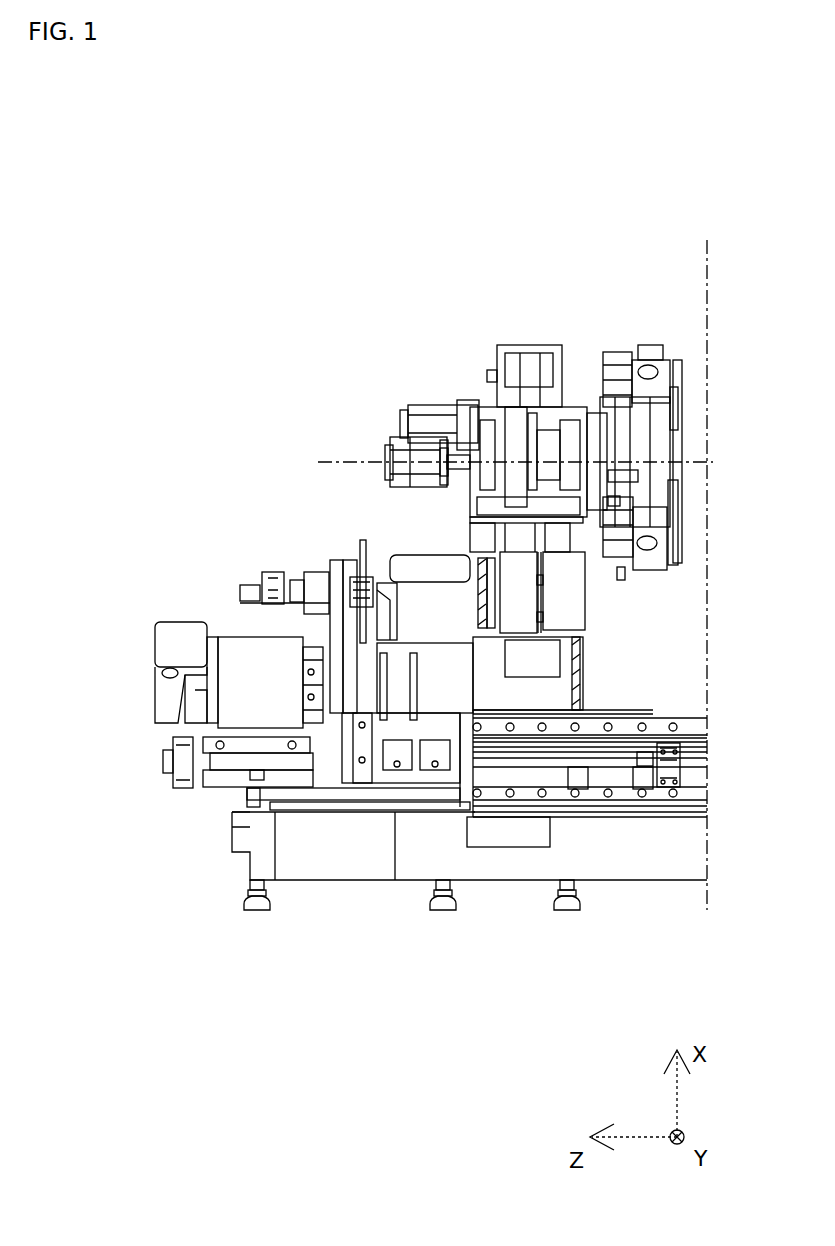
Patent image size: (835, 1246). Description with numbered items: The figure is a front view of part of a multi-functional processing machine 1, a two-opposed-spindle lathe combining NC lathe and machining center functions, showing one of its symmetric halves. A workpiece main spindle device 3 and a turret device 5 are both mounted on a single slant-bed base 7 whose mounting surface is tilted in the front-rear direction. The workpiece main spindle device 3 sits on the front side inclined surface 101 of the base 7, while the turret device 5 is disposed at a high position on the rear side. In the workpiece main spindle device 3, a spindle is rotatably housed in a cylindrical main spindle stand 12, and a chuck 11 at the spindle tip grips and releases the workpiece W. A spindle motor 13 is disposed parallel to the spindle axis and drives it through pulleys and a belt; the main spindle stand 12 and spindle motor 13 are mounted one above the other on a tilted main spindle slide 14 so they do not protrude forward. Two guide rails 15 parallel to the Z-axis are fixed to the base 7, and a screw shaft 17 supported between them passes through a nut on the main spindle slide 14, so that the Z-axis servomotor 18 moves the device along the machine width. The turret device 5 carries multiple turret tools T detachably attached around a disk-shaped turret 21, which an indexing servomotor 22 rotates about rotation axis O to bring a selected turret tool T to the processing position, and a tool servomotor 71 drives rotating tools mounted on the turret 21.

The multi-functional processing machine 1 is at (587, 197).
The workpiece main spindle device 3 is at (212, 565).
The turret device 5 is at (520, 325).
The base 7 is at (417, 855).
The chuck 11 is at (517, 580).
The main spindle stand 12 is at (407, 572).
The spindle motor 13 is at (238, 668).
The main spindle slide 14 is at (333, 793).
The guide rail 15 is at (684, 722).
The screw shaft 17 is at (532, 763).
The Z-axis servomotor 18 is at (186, 762).
The turret 21 is at (675, 403).
The indexing servomotor 22 is at (430, 408).
The tool servomotor 71 is at (387, 437).
The front side inclined surface 101 is at (693, 775).
The rotation axis O is at (347, 460).
The turret tool T is at (632, 578).
The workpiece W is at (570, 596).